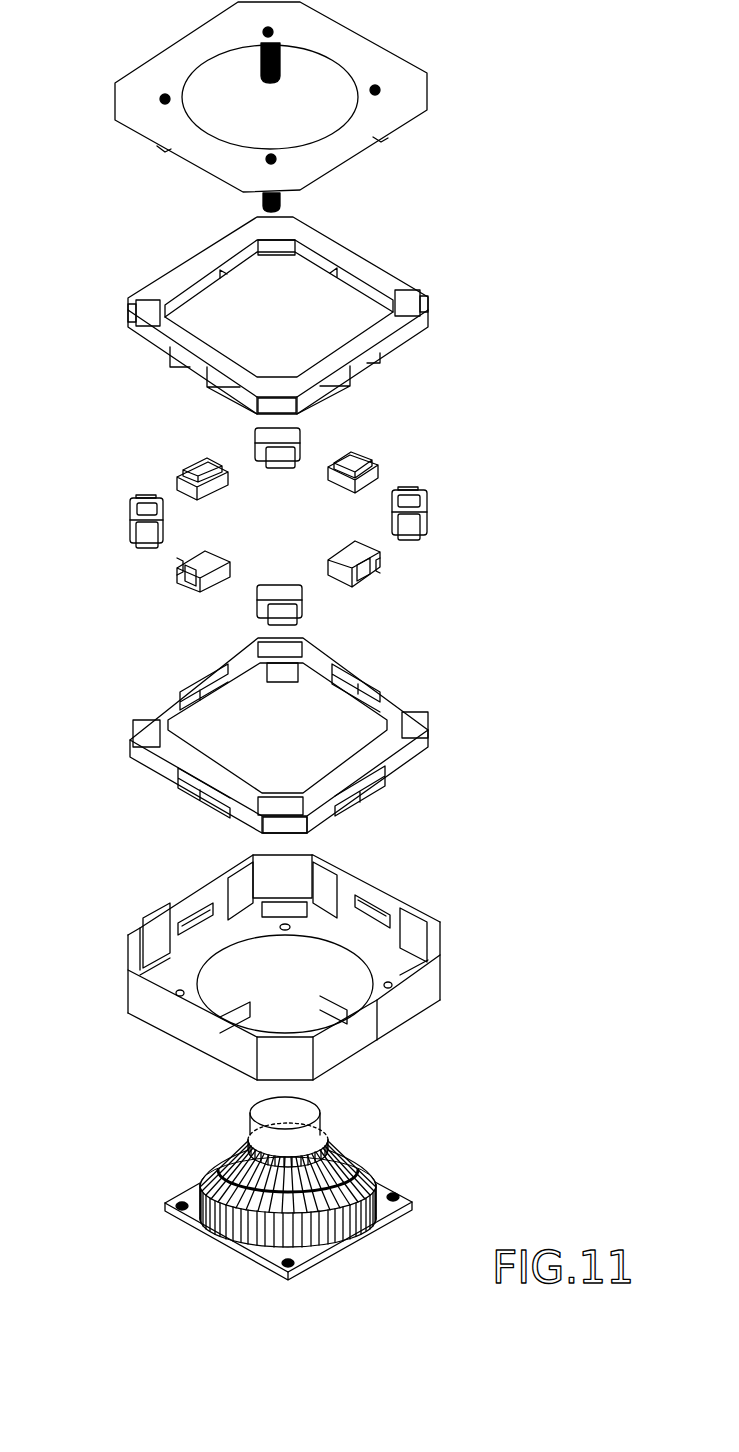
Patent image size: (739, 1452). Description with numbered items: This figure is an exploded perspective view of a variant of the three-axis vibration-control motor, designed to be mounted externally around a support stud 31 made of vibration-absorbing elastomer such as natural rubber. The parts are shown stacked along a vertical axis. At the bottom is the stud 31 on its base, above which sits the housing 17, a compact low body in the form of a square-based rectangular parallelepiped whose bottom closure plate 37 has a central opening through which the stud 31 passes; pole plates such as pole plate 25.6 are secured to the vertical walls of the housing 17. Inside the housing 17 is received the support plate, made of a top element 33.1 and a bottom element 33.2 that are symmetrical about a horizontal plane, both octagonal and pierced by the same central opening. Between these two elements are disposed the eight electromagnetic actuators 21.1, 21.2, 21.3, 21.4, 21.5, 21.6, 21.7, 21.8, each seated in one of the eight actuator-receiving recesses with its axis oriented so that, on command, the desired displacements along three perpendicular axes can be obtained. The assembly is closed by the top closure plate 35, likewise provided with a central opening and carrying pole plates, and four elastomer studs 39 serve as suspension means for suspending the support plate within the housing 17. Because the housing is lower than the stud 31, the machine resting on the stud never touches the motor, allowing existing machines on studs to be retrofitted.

The housing 17 is at (144, 1027).
The actuator 21.1 is at (425, 518).
The actuator 21.2 is at (130, 527).
The actuator 21.3 is at (257, 600).
The actuator 21.4 is at (300, 450).
The actuator 21.5 is at (377, 480).
The actuator 21.6 is at (177, 481).
The actuator 21.7 is at (180, 590).
The actuator 21.8 is at (380, 585).
The pole plate 25.6 is at (213, 902).
The stud 31 is at (350, 1145).
The top element of the support plate 33.1 is at (343, 243).
The bottom element of the support plate 33.2 is at (158, 777).
The top closure plate 35 is at (192, 165).
The bottom closure plate 37 is at (225, 963).
The elastomer stud 39 is at (165, 99).